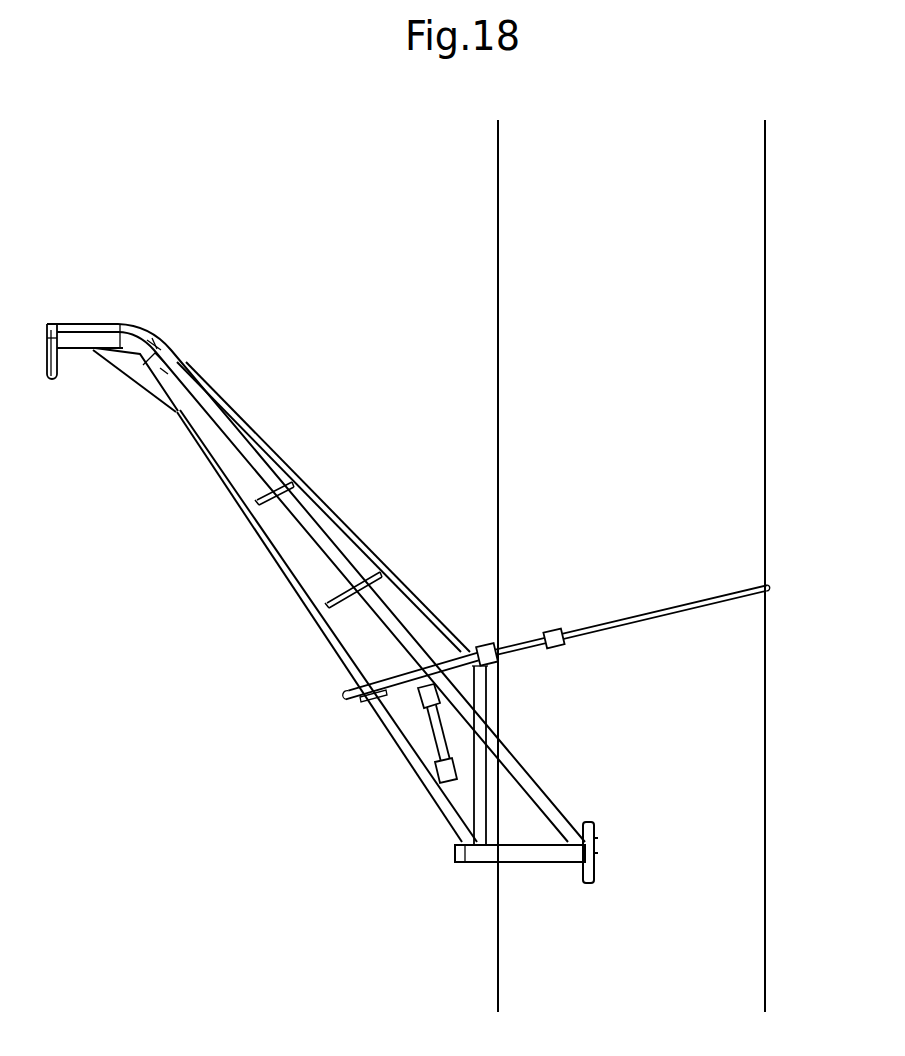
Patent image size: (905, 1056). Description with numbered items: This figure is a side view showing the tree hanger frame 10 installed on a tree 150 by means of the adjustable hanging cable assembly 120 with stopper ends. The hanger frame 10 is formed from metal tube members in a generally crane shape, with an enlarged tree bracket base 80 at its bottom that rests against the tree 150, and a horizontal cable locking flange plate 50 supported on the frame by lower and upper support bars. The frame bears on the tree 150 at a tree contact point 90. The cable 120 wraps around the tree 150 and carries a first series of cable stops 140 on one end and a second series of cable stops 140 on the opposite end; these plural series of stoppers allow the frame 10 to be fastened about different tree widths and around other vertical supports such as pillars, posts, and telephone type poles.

The tree hanger frame 10 is at (226, 300).
The tree 150 is at (583, 566).
The cable locking flange plate 50 is at (372, 667).
The cable stops 140 is at (361, 733).
The tree contact point 90 is at (547, 687).
The adjustable hanging cable assembly 120 is at (677, 632).
The tree bracket base 80 is at (497, 881).